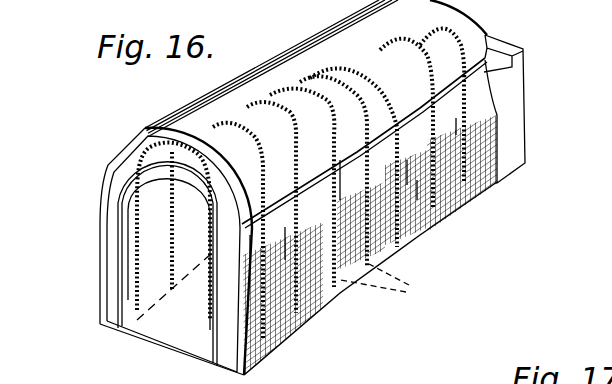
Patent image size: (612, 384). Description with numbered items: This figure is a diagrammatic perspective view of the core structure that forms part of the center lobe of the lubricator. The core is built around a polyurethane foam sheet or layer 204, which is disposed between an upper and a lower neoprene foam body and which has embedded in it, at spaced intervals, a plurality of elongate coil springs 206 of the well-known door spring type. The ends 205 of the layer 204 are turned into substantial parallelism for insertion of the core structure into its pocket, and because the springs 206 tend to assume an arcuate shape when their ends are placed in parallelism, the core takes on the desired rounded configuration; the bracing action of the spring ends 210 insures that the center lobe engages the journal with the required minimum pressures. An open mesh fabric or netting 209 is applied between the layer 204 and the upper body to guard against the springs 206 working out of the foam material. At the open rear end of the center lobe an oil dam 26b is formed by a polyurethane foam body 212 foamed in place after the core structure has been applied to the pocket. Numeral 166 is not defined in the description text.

The polyurethane foam sheet or layer 204 is at (390, 241).
The ends of layer 205 is at (110, 325).
The elongate coil springs 206 is at (449, 9).
The open mesh fabric or netting 209 is at (100, 268).
The spring ends 210 is at (391, 284).
The polyurethane foam body 212 is at (513, 117).
The floor panel 166 is at (173, 329).
The oil dam 26b is at (528, 60).